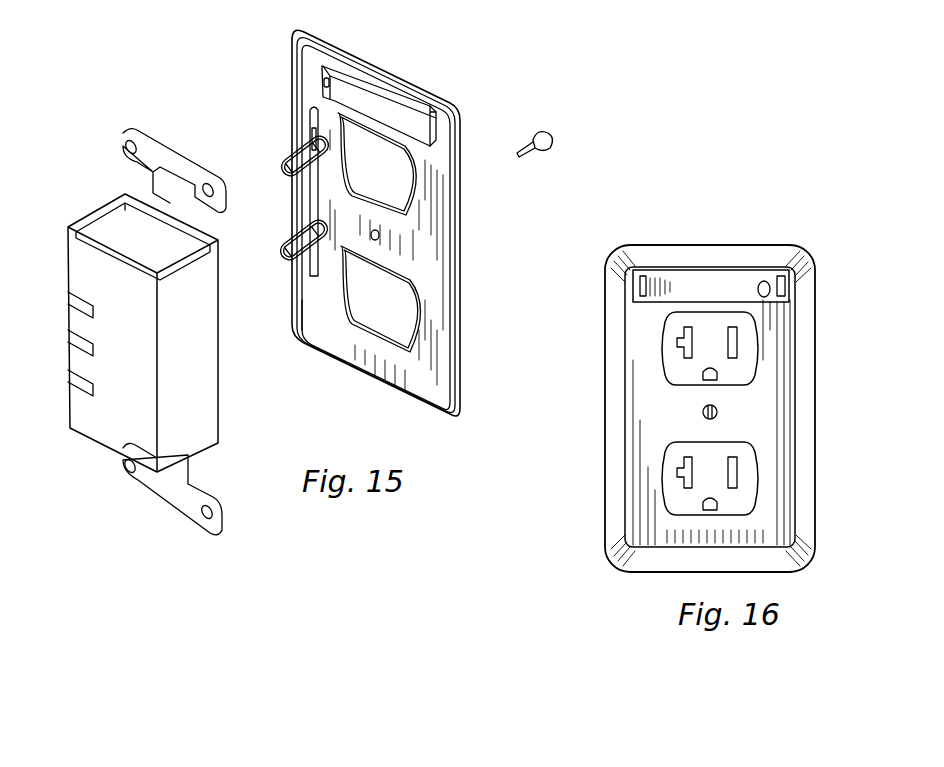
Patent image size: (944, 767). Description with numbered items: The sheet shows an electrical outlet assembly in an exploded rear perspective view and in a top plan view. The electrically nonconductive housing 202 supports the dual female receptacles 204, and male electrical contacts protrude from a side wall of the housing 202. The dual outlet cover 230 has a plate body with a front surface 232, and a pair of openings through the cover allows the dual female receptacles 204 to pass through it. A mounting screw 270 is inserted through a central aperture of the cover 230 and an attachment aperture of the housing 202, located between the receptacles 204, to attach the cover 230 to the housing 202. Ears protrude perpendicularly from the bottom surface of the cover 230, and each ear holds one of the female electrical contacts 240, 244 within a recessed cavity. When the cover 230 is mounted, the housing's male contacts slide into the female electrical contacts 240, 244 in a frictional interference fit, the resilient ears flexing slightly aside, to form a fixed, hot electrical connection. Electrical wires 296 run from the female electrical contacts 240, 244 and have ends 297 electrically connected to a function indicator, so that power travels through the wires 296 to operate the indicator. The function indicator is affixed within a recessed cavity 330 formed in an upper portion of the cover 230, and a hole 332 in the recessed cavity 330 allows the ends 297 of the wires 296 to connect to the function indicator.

In FIG. 15, the electrically nonconductive housing 202 is at (96, 214).
In FIG. 16, the dual female receptacles 204 is at (759, 352).
In FIG. 15, the dual outlet cover 230 is at (418, 94).
In FIG. 16, the dual outlet cover 230 is at (710, 397).
In FIG. 16, the front surface 232 is at (775, 232).
In FIG. 15, the female electrical contact 240 is at (300, 186).
In FIG. 15, the female electrical contact 244 is at (300, 288).
In FIG. 15, the mounting screw 270 is at (465, 184).
In FIG. 16, the mounting screw 270 is at (703, 411).
In FIG. 15, the electrical wires 296 is at (300, 134).
In FIG. 15, the ends 297 is at (314, 104).
In FIG. 15, the recessed cavity 330 is at (343, 91).
In FIG. 16, the recessed cavity 330 is at (746, 280).
In FIG. 15, the hole 332 is at (320, 78).
In FIG. 16, the hole 332 is at (776, 306).